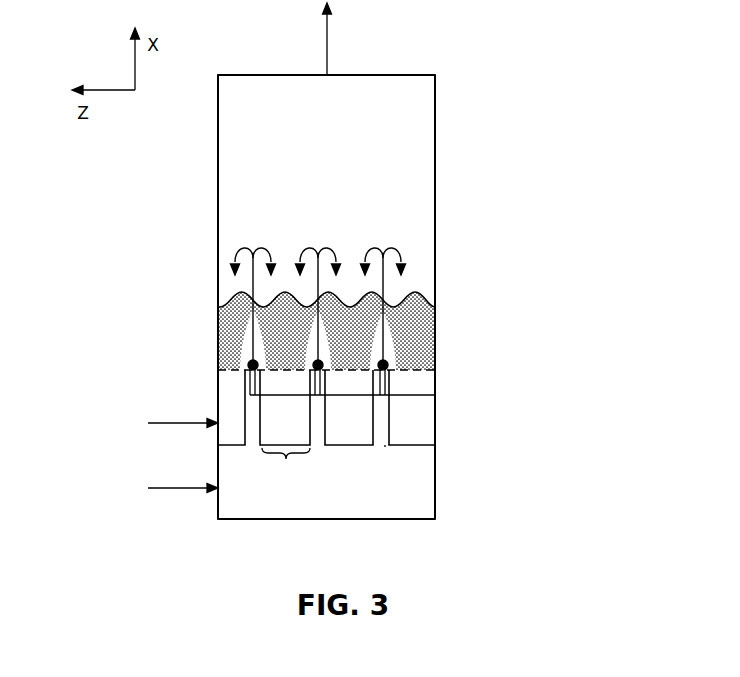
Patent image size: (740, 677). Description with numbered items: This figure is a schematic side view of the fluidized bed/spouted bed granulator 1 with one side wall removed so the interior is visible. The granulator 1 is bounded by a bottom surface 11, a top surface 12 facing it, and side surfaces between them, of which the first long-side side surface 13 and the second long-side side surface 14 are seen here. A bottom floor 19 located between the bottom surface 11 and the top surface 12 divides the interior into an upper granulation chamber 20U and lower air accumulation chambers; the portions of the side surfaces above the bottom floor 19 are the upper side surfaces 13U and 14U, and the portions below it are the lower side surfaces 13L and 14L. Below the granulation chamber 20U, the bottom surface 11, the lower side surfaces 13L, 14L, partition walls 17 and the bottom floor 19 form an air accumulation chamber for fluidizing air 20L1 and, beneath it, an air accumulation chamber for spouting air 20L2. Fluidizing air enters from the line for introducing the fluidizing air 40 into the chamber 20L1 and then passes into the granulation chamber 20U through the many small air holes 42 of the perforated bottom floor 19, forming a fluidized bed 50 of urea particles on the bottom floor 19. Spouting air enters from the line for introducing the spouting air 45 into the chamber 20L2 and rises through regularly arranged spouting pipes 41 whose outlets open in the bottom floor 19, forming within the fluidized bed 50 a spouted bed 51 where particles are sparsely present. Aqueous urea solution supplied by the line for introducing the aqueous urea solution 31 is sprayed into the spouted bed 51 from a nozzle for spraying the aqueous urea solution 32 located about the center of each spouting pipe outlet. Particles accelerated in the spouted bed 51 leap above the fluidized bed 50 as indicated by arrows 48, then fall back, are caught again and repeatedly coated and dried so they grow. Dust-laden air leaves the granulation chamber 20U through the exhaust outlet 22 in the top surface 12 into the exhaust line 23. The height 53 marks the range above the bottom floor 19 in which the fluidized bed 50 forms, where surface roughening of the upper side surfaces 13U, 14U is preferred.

The granulator 1 is at (446, 78).
The bottom surface 11 is at (288, 519).
The top surface 12 is at (297, 76).
The first long-side side surface 13 is at (128, 178).
The first long-side side surface upper portion 13U is at (219, 143).
The first long-side side surface lower portion 13L is at (220, 503).
The second long-side side surface 14 is at (594, 297).
The second long-side side surface upper portion 14U is at (448, 222).
The second long-side side surface lower portion 14L is at (440, 433).
The partition wall 17 is at (284, 460).
The bottom floor 19 is at (404, 377).
The granulation chamber 20U is at (343, 159).
The air accumulation chamber for fluidizing air 20L1 is at (330, 437).
The air accumulation chamber for spouting air 20L2 is at (314, 473).
The exhaust outlet 22 is at (328, 80).
The exhaust line 23 is at (344, 39).
The line for introducing the aqueous urea solution 31 is at (444, 395).
The nozzle for spraying the aqueous urea solution 32 is at (253, 357).
The line for introducing the fluidizing air 40 is at (168, 423).
The spouting pipe 41 is at (386, 438).
The air hole 42 is at (340, 372).
The line for introducing the spouting air 45 is at (168, 488).
The arrows 48 is at (244, 254).
The fluidized bed 50 is at (412, 318).
The spouted bed 51 is at (383, 340).
The height 53 is at (214, 303).